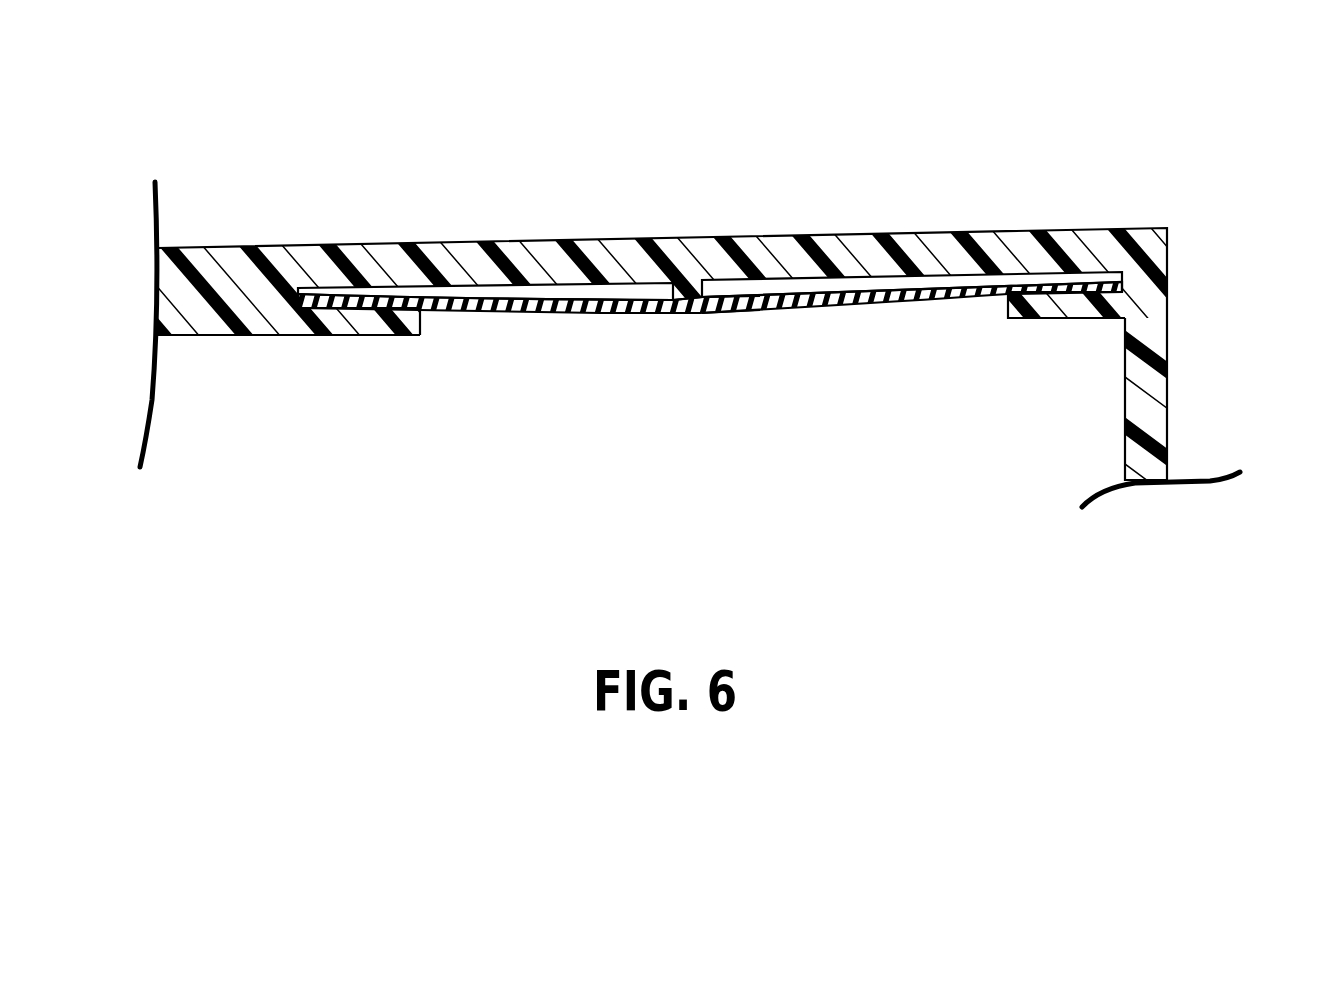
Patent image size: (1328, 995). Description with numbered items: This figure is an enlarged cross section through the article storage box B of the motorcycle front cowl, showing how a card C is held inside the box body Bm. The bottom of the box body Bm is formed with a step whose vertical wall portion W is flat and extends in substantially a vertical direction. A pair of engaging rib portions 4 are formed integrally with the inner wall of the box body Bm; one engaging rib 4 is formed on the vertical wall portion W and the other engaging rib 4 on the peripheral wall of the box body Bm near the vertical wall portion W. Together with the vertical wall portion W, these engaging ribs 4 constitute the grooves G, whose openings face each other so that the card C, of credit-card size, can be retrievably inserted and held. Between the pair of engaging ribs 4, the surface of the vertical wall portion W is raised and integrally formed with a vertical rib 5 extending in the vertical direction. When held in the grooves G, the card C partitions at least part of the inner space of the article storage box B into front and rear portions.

The article storage box B is at (506, 226).
The box body Bm is at (1170, 340).
The groove G is at (310, 287).
The vertical wall portion W is at (762, 235).
The card C is at (848, 308).
The engaging rib portion 4 is at (420, 322).
The vertical rib 5 is at (730, 307).